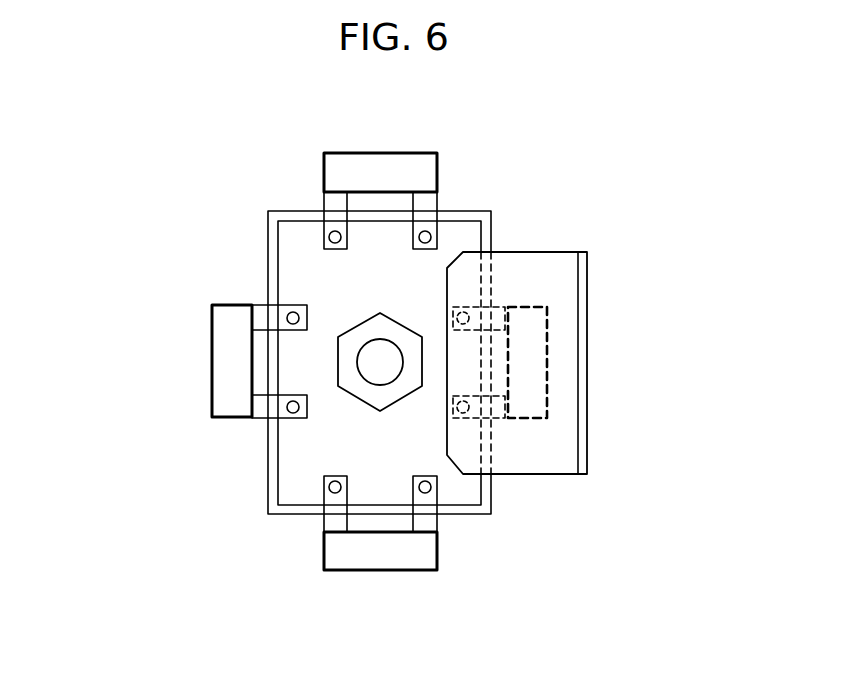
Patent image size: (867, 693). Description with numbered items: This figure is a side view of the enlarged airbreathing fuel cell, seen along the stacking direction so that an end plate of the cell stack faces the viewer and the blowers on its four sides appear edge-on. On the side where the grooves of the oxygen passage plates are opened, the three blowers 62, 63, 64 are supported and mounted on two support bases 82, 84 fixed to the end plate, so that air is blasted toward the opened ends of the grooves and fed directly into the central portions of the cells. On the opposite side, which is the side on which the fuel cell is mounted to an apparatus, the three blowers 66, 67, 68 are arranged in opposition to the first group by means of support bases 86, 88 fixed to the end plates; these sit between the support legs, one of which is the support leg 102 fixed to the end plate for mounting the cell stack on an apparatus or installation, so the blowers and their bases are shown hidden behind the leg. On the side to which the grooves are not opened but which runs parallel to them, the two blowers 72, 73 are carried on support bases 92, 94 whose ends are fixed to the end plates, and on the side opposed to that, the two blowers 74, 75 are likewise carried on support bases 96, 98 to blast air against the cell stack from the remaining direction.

The blower 62 is at (162, 361).
The blower 63 is at (162, 361).
The blower 64 is at (220, 392).
The blower 66 is at (609, 362).
The blower 67 is at (609, 362).
The blower 68 is at (528, 340).
The blower 72 is at (382, 144).
The blower 73 is at (382, 162).
The blower 74 is at (380, 581).
The blower 75 is at (380, 562).
The support base 82 is at (262, 408).
The support base 84 is at (263, 317).
The support base 86 is at (497, 407).
The support base 88 is at (497, 313).
The support base 92 is at (333, 202).
The support base 94 is at (428, 202).
The support base 96 is at (332, 522).
The support base 98 is at (428, 522).
The support leg 102 is at (550, 442).